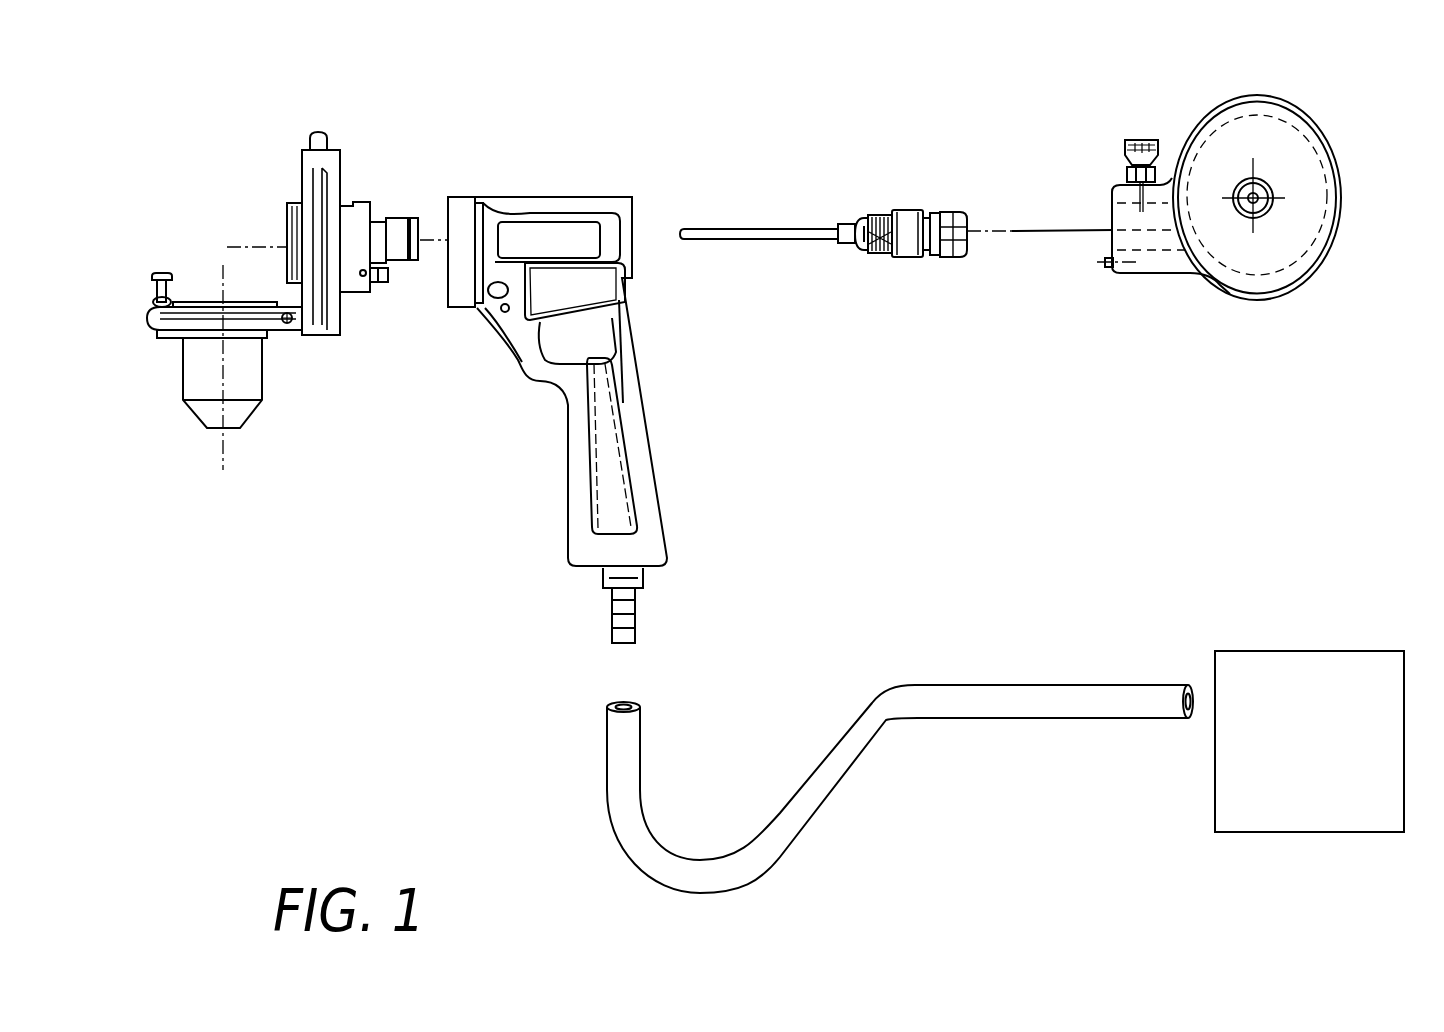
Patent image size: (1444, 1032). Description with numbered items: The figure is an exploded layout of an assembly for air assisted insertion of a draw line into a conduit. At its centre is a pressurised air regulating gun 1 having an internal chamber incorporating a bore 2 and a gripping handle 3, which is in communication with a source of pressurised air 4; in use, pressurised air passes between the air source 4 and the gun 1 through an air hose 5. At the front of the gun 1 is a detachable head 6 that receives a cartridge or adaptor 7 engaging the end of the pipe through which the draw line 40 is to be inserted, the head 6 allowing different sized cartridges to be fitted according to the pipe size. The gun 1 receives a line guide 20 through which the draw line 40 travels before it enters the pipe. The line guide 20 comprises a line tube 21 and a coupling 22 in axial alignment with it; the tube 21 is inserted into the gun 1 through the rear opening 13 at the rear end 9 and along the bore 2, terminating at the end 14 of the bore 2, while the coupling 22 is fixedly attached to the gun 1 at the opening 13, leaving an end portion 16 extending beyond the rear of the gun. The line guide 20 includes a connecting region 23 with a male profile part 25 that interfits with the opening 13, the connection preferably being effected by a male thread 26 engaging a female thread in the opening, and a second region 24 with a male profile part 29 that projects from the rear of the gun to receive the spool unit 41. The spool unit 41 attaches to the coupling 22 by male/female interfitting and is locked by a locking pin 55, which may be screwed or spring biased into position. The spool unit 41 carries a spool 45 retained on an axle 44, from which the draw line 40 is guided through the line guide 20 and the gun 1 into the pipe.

The pressurised air regulating gun 1 is at (564, 368).
The bore 2 is at (430, 236).
The gripping handle 3 is at (648, 490).
The source of pressurised air 4 is at (1314, 815).
The air hose 5 is at (935, 703).
The detachable head 6 is at (207, 215).
The adaptor 7 is at (243, 410).
The rear end 9 is at (660, 188).
The rear opening 13 is at (662, 205).
The end of bore 14 is at (445, 282).
The end portion 16 is at (955, 212).
The line guide 20 is at (855, 236).
The line tube 21 is at (752, 240).
The coupling 22 is at (961, 213).
The connecting region 23 is at (877, 264).
The second region 24 is at (919, 260).
The male profile part 25 is at (866, 222).
The male thread 26 is at (887, 257).
The male profile part 29 is at (955, 260).
The draw line 40 is at (1043, 229).
The spool unit 41 is at (1254, 175).
The axle 44 is at (1258, 200).
The spool 45 is at (1297, 263).
The locking pin 55 is at (1140, 138).